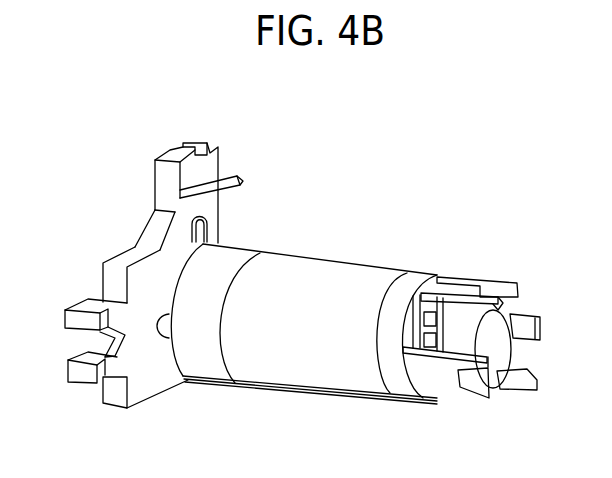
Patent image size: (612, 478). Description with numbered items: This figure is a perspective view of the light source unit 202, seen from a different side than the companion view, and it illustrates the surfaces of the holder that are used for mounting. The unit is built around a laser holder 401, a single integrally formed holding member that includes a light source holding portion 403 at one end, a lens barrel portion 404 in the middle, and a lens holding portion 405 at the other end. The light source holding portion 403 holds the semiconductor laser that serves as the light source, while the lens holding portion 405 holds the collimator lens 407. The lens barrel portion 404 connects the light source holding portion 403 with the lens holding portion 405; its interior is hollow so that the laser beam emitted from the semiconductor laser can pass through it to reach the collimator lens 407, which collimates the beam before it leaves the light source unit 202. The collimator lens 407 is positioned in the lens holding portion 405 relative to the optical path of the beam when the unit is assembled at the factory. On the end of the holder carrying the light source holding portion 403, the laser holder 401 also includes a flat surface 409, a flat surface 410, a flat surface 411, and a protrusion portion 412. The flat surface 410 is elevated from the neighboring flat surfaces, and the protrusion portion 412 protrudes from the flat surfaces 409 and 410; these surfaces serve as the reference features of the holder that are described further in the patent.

The light source unit 202 is at (450, 170).
The laser holder 401 is at (236, 386).
The light source holding portion 403 is at (103, 272).
The lens barrel portion 404 is at (370, 272).
The lens holding portion 405 is at (515, 305).
The collimator lens 407 is at (505, 352).
The flat surface 409 is at (218, 155).
The flat surface 410 is at (218, 214).
The flat surface 411 is at (190, 228).
The protrusion portion 412 is at (238, 179).